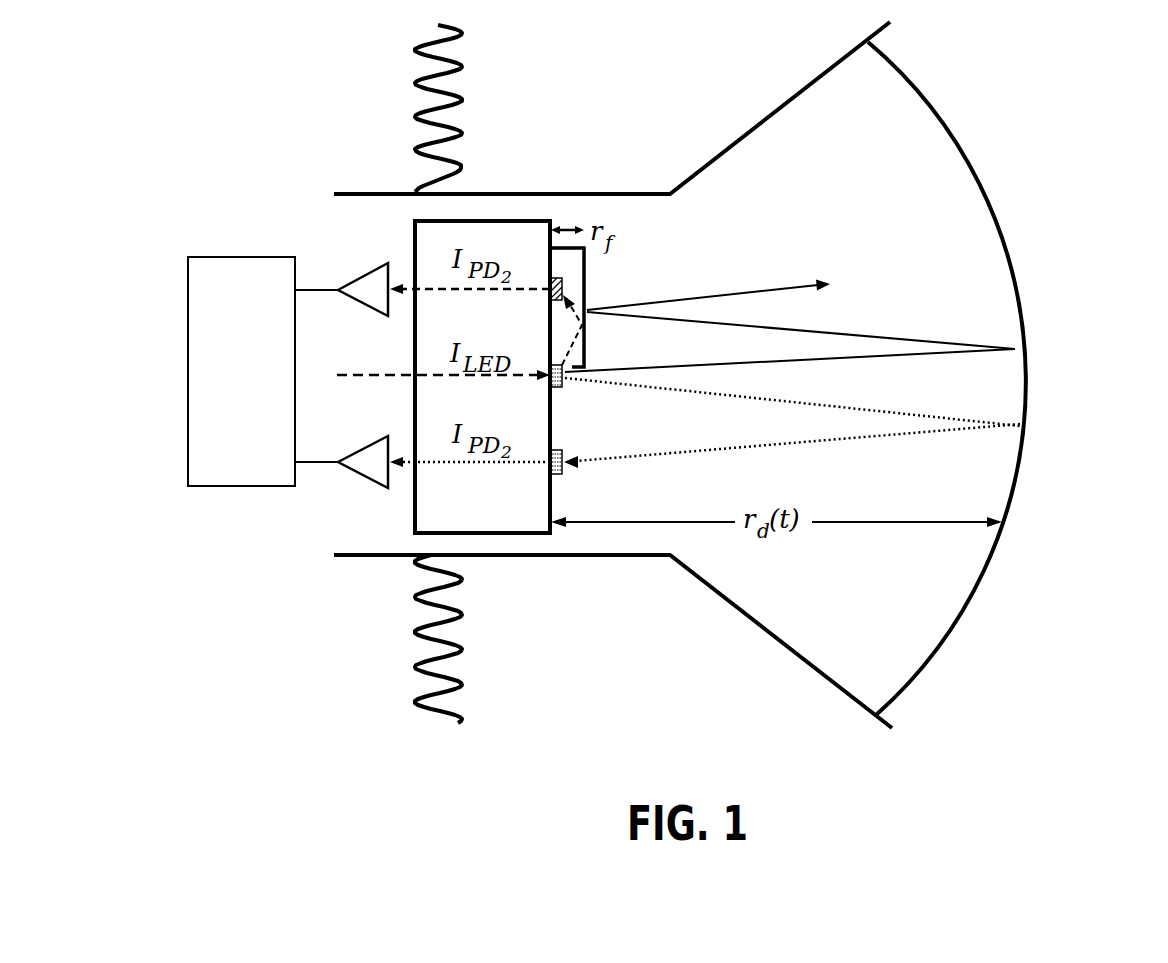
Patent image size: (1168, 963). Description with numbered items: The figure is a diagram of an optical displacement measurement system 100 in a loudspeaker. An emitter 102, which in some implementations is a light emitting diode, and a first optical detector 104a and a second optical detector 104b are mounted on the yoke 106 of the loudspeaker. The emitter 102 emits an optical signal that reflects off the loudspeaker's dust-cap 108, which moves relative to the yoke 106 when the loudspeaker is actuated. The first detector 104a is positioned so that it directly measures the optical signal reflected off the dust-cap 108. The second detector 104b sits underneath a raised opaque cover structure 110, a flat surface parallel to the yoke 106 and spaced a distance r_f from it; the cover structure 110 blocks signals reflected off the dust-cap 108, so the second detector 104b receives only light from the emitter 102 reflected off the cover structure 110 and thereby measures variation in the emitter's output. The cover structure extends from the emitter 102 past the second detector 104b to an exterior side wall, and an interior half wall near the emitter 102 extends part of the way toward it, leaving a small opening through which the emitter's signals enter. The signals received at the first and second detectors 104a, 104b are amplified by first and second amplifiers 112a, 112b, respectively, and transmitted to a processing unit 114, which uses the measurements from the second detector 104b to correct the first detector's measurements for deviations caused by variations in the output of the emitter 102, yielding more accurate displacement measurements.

The optical displacement measurement system 100 is at (1050, 122).
The emitter 102 is at (638, 411).
The first optical detector 104a is at (562, 475).
The second optical detector 104b is at (564, 278).
The yoke 106 is at (540, 535).
The dust-cap 108 is at (978, 605).
The raised opaque cover structure 110 is at (586, 258).
The first amplifier 112a is at (362, 478).
The second amplifier 112b is at (367, 276).
The processing unit 114 is at (247, 487).